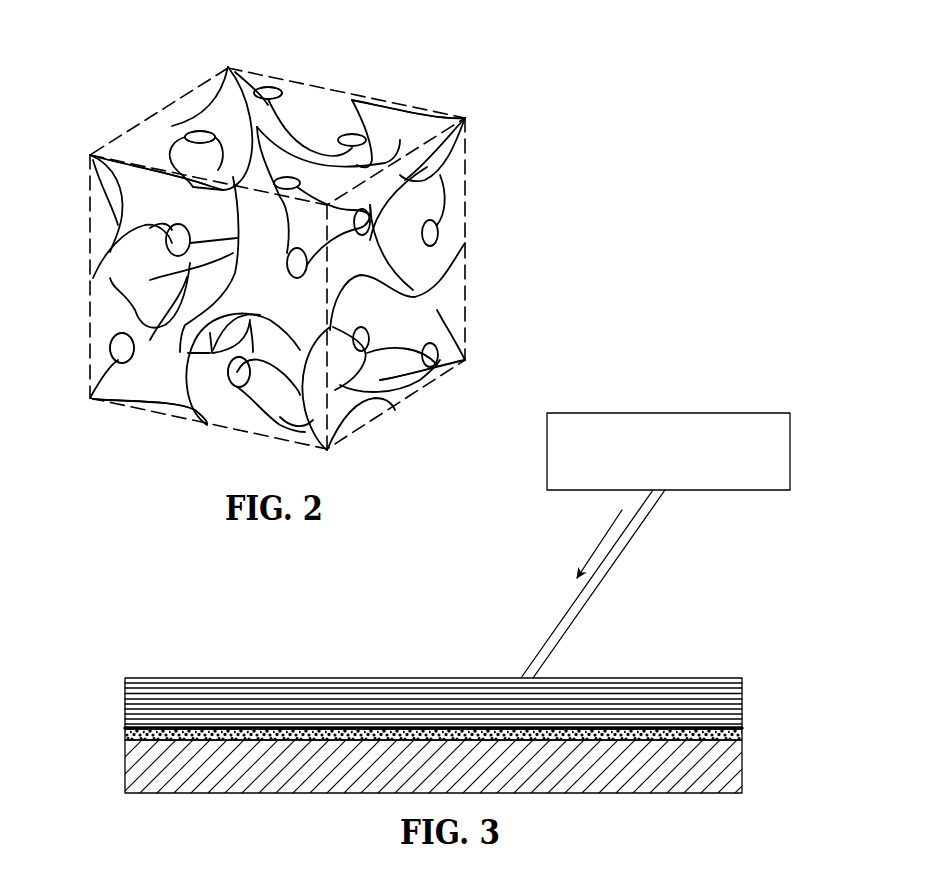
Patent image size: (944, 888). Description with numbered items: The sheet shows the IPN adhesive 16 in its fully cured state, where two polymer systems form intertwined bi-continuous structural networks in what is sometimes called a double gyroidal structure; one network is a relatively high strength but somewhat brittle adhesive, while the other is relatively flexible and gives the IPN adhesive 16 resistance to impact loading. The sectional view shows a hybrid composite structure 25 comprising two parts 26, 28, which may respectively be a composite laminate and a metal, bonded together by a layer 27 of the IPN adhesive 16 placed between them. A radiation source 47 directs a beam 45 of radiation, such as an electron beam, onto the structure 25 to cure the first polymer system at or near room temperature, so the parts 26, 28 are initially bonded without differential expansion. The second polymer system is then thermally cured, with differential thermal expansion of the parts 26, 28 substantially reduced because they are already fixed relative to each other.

In FIG. 2, the IPN adhesive 16 is at (364, 85).
In FIG. 3, the IPN adhesive 16 is at (128, 733).
In FIG. 3, the hybrid composite structure 25 is at (448, 745).
In FIG. 3, the part 26 is at (722, 695).
In FIG. 3, the layer of IPN adhesive 27 is at (762, 733).
In FIG. 3, the part 28 is at (723, 773).
In FIG. 3, the beam of radiation 45 is at (602, 582).
In FIG. 3, the radiation source 47 is at (790, 448).